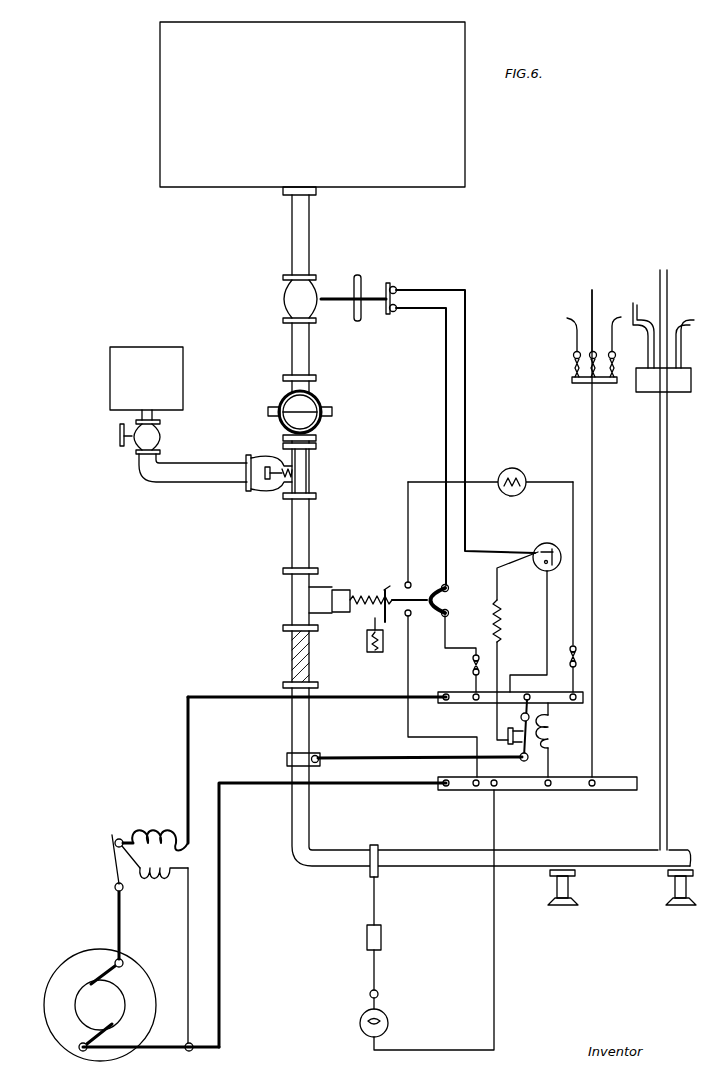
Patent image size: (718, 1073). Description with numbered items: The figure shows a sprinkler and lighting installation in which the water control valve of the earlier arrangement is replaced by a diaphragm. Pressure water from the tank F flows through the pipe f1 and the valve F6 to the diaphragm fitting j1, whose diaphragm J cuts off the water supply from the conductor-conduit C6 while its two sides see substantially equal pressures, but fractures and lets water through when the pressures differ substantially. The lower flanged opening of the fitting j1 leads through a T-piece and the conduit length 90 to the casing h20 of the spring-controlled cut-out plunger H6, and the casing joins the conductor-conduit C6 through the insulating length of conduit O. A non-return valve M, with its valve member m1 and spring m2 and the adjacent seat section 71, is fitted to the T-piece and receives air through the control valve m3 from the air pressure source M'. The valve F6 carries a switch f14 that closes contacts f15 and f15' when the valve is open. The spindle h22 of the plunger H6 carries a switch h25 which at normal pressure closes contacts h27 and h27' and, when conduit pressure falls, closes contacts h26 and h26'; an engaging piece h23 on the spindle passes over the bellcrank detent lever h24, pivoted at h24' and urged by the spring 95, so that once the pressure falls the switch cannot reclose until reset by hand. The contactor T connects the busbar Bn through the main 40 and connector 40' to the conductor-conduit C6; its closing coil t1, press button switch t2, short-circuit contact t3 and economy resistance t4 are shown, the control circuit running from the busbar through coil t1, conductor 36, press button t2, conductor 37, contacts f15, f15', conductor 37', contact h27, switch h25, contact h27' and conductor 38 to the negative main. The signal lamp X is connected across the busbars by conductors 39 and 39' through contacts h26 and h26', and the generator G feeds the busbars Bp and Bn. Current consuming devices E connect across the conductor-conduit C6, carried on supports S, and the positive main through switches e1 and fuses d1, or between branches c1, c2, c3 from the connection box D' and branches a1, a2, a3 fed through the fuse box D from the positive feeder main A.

The tank F is at (312, 108).
The pipe f1 is at (309, 233).
The valve F6 is at (281, 300).
The switch f14 is at (381, 316).
The contact f15 is at (401, 278).
The contact f15' is at (407, 321).
The conductor 37 is at (465, 421).
The conductor 37' is at (421, 446).
The diaphragm J is at (318, 417).
The diaphragm fitting j1 is at (318, 400).
The valve seat section 71 is at (311, 472).
The conduit length 90 is at (310, 528).
The insulating length of conduit O is at (292, 656).
The spring-controlled cut-out plunger H6 is at (292, 603).
The casing h20 is at (336, 589).
The engaging piece h23 is at (375, 590).
The bellcrank detent lever h24 is at (354, 611).
The pivot h24' is at (348, 641).
The spring 95 is at (372, 652).
The spindle h22 is at (398, 608).
The switch h25 is at (430, 593).
The contact h26 is at (421, 627).
The contact h26' is at (395, 535).
The contact h27 is at (462, 579).
The contact h27' is at (467, 607).
The conductor 38 is at (446, 630).
The conductor 39 is at (428, 737).
The conductor 39' is at (421, 656).
The signal lamp X is at (514, 467).
The press button switch t2 is at (553, 570).
The economy resistance t4 is at (499, 622).
The conductor 36 is at (548, 621).
The short-circuit contact t3 is at (507, 732).
The contactor closing coil t1 is at (556, 730).
The busbar Bn is at (583, 696).
The busbar Bp is at (624, 768).
The contactor T is at (533, 760).
The main 40 is at (417, 747).
The connector 40' is at (317, 770).
The generator G is at (245, 922).
The conductor-conduit C6 is at (310, 713).
The pipe supports S is at (666, 904).
The fuse d1 is at (367, 940).
The switch e1 is at (370, 994).
The current consuming device E is at (361, 1028).
The positive feeder main A is at (494, 975).
The fuse box D is at (584, 379).
The branch a1 is at (560, 330).
The branch a2 is at (592, 290).
The branch a3 is at (614, 327).
The connection box D' is at (660, 391).
The branch c1 is at (641, 327).
The branch c2 is at (663, 270).
The branch c3 is at (687, 335).
The source of air pressure M' is at (146, 383).
The control valve m3 is at (136, 445).
The non-return valve M is at (268, 487).
The valve member m1 is at (268, 466).
The spring m2 is at (280, 486).